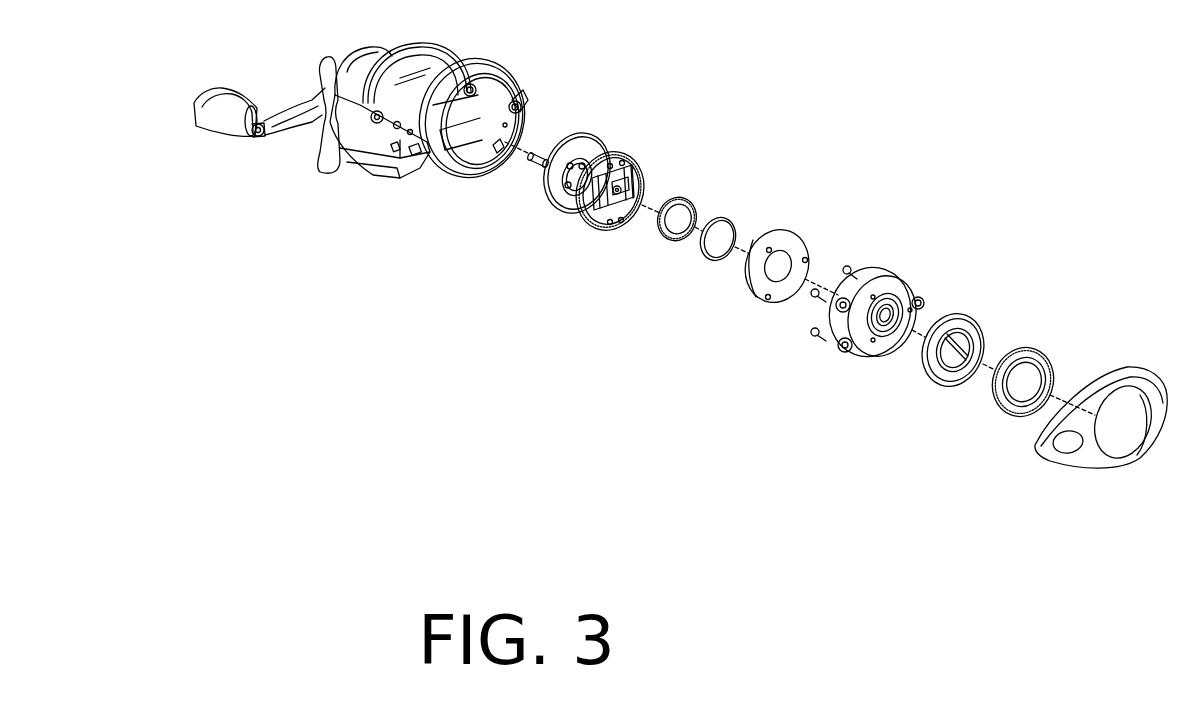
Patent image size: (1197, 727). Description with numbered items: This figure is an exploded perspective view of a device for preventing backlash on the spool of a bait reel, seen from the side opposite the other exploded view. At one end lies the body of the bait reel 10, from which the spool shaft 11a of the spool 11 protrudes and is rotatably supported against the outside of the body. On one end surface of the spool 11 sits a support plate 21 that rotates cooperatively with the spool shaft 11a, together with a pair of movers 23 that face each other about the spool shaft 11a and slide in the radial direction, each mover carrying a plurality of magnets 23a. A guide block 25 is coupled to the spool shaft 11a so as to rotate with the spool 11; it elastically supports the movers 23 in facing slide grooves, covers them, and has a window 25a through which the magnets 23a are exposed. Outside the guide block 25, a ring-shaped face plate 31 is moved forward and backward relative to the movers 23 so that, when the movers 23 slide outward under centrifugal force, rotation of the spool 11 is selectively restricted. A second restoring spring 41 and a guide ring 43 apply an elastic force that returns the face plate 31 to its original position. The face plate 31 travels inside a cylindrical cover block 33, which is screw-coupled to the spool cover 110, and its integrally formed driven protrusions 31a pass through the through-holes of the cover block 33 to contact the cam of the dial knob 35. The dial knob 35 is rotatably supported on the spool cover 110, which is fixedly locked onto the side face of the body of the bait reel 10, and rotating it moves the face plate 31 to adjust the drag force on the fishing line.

The bait reel 10 is at (536, 100).
The spool 11 is at (563, 207).
The spool shaft 11a is at (530, 164).
The support plate 21 is at (606, 150).
The movers 23 is at (646, 180).
The magnets 23a is at (641, 165).
The guide block 25 is at (586, 232).
The window 25a is at (653, 190).
The ring-shaped face plate 31 is at (762, 305).
The driven protrusions 31a is at (814, 259).
The cover block 33 is at (865, 357).
The dial knob 35 is at (939, 388).
The second restoring spring 41 is at (710, 262).
The guide ring 43 is at (666, 245).
The spool cover 110 is at (1106, 375).